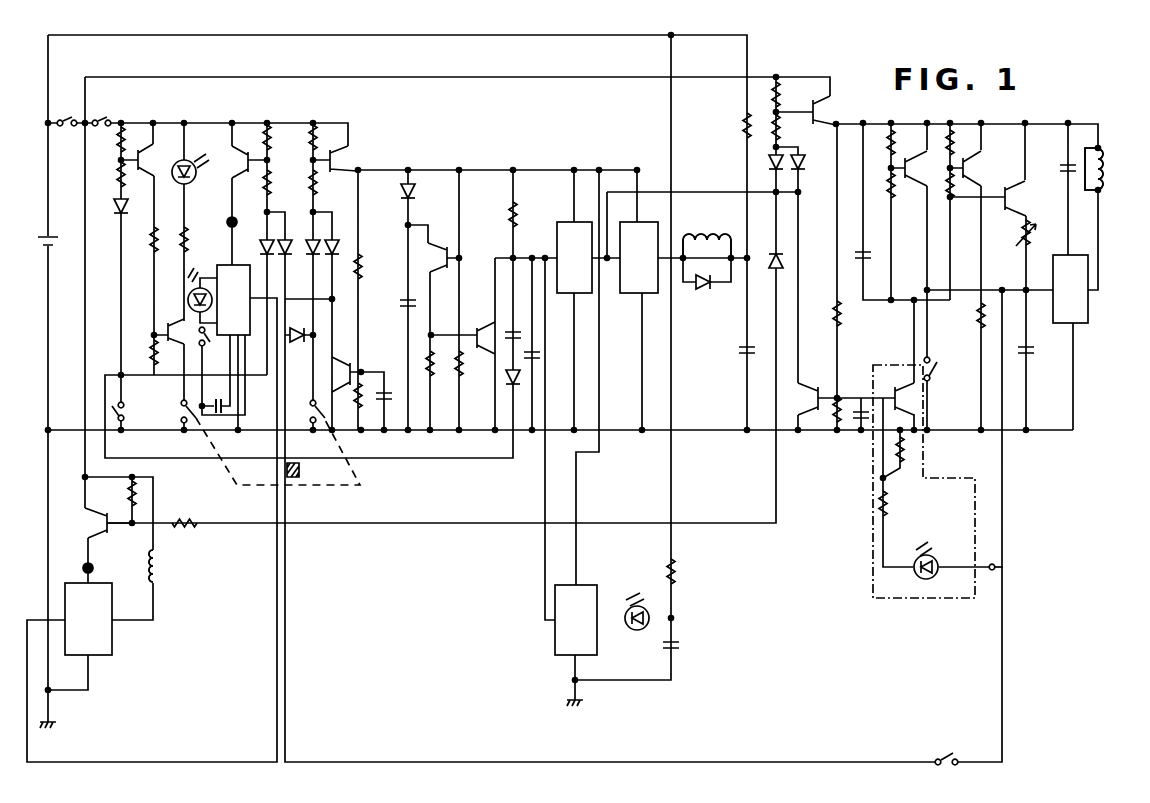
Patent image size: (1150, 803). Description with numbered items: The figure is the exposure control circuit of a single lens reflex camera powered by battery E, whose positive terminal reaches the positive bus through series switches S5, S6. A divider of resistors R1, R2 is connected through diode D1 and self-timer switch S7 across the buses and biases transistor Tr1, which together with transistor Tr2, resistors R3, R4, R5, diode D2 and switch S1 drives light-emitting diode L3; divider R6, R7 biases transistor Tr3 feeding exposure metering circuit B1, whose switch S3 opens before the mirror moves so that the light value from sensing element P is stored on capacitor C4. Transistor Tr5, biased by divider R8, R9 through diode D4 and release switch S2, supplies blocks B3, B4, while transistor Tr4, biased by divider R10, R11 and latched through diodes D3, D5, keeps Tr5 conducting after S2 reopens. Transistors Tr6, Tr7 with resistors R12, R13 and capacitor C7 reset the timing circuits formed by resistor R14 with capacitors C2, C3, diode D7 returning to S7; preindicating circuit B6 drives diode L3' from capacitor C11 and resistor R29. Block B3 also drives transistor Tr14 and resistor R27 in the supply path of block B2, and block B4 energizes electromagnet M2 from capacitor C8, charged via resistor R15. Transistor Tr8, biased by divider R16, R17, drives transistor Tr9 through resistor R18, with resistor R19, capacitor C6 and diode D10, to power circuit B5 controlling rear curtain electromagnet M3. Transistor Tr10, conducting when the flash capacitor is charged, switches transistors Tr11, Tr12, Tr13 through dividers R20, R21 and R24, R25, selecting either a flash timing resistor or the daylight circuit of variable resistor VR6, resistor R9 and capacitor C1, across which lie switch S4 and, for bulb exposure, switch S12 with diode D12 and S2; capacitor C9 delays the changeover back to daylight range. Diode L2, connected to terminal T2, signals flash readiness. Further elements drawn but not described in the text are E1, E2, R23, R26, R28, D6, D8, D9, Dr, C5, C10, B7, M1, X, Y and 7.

The battery E is at (41, 245).
The connector E1 is at (245, 223).
The connector E2 is at (98, 571).
The switch S1 is at (181, 411).
The switch S2 is at (308, 411).
The switch S3 is at (212, 340).
The switch S4 is at (939, 369).
The switch S5 is at (65, 113).
The switch S6 is at (100, 113).
The self-timer actuation switch S7 is at (130, 412).
The switch S12 is at (950, 752).
The resistor R1 is at (110, 140).
The resistor R2 is at (110, 174).
The resistor R3 is at (143, 239).
The resistor R4 is at (145, 352).
The resistor R5 is at (175, 239).
The resistor R6 is at (277, 137).
The resistor R7 is at (277, 182).
The resistor R8 is at (323, 137).
The resistor R9 is at (323, 182).
The resistor R10 is at (350, 266).
The resistor R11 is at (351, 395).
The resistor R12 is at (423, 367).
The resistor R13 is at (450, 375).
The resistor R14 is at (528, 214).
The resistor R15 is at (733, 125).
The resistor R16 is at (765, 94).
The resistor R17 is at (766, 127).
The resistor R18 is at (853, 313).
The resistor R19 is at (825, 410).
The resistor R20 is at (881, 142).
The resistor R21 is at (881, 185).
The resistor R23 is at (913, 461).
The resistor R24 is at (965, 142).
The resistor R25 is at (965, 187).
The resistor R26 is at (969, 315).
The resistor R27 is at (186, 511).
The resistor R28 is at (120, 493).
The charge-current regulating resistor R29 is at (687, 571).
The daylight shutter speed setting variable resistor VR6 is at (1040, 233).
The switching transistor Tr1 is at (143, 157).
The transistor Tr2 is at (169, 325).
The transistor Tr3 is at (244, 169).
The transistor Tr4 is at (346, 366).
The transistor Tr5 is at (353, 159).
The transistor Tr6 is at (444, 250).
The transistor Tr7 is at (480, 330).
The transistor Tr8 is at (834, 109).
The transistor Tr9 is at (817, 392).
The transistor Tr10 is at (896, 391).
The first transistor Tr11 is at (918, 163).
The second transistor Tr12 is at (989, 168).
The third transistor Tr13 is at (1033, 198).
The transistor Tr14 is at (114, 529).
The reverse-current preventing diode D1 is at (112, 208).
The diode D2 is at (257, 249).
The diode D3 is at (281, 239).
The reverse-current preventing diode D4 is at (307, 239).
The diode D5 is at (341, 239).
The diode D6 is at (398, 192).
The diode D7 is at (507, 386).
The diode D8 is at (705, 290).
The diode D9 is at (767, 173).
The diode D10 is at (813, 164).
The diode D12 is at (301, 326).
The diode Dr is at (769, 252).
The capacitor C1 is at (1036, 351).
The capacitor C2 is at (509, 347).
The capacitor C3 is at (541, 356).
The capacitor C4 is at (221, 398).
The capacitor C5 is at (393, 389).
The capacitor C6 is at (857, 394).
The capacitor C7 is at (400, 303).
The energy storing capacitor C8 is at (739, 351).
The capacitor C9 is at (855, 256).
The capacitor C10 is at (1079, 187).
The energy storing capacitor C11 is at (661, 650).
The light-emitting diode L2 is at (935, 567).
The light-emitting diode L3 is at (193, 169).
The light-emitting diode L3' is at (635, 619).
The light value sensing element P is at (199, 300).
The exposure metering circuit B1 is at (233, 300).
The circuit block B2 is at (88, 619).
The circuit block B3 is at (574, 257).
The circuit block B4 is at (639, 257).
The circuit block B5 is at (1070, 289).
The self-timer action preindicating circuit B6 is at (576, 620).
The circuit block B7 is at (912, 598).
The magnet coil M1 is at (166, 566).
The electromagnet M2 is at (707, 239).
The rear shutter curtain control electromagnet M3 is at (1107, 169).
The terminal X is at (635, 155).
The terminal Y is at (640, 451).
The terminal T2 is at (1006, 571).
The shutter release member 7 is at (299, 470).